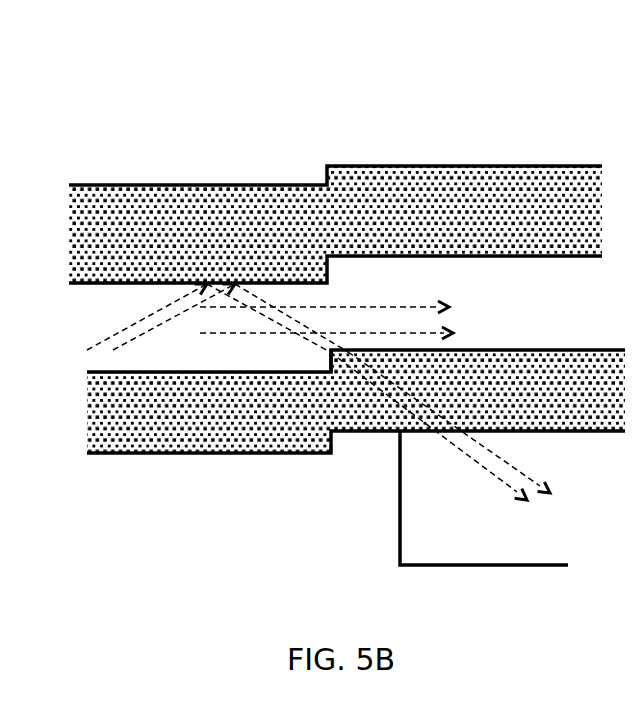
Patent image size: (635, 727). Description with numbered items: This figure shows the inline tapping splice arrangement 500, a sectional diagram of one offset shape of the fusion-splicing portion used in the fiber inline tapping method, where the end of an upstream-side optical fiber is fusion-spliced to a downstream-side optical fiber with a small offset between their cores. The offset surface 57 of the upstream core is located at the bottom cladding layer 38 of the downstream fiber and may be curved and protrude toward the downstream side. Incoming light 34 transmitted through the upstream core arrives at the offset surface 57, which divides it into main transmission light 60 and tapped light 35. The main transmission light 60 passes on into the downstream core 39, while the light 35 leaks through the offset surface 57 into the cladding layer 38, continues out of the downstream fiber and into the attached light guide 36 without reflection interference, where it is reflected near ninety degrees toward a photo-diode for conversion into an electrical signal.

The optical structure 500 is at (218, 117).
The optical core 39 is at (489, 285).
The cladding layer 38 is at (331, 432).
The offset surface 57 is at (331, 351).
The light guide 36 is at (448, 525).
The incident light rays 34 is at (217, 318).
The main transmission light 60 is at (326, 304).
The tapped light 35 is at (440, 426).